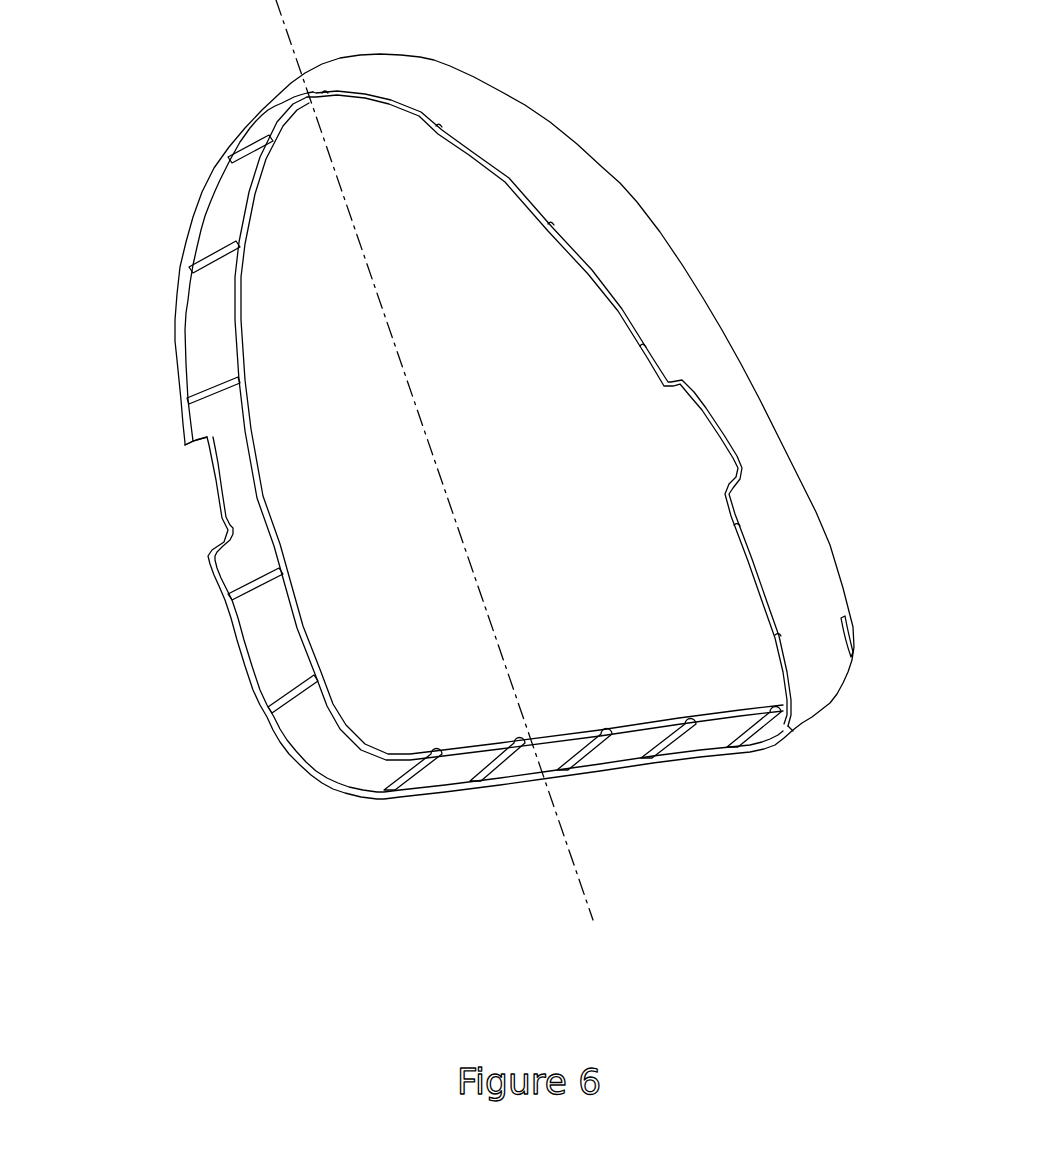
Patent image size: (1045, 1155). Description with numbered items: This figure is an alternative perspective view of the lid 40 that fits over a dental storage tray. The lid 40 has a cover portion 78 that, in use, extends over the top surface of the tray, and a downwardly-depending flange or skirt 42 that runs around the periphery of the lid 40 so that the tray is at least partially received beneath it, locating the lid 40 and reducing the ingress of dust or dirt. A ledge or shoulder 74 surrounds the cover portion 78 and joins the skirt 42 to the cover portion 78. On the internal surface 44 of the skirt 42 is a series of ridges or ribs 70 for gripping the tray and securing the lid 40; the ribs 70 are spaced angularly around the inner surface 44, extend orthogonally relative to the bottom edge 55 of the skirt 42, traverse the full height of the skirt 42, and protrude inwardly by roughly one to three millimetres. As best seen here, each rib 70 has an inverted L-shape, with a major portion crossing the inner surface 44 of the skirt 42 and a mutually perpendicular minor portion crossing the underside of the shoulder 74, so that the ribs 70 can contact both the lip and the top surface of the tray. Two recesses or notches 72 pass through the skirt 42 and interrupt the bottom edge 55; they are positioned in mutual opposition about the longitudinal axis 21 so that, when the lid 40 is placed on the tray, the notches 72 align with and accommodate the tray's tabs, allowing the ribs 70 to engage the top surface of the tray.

The lid 40 is at (680, 188).
The skirt 42 is at (540, 143).
The internal surface 44 is at (200, 427).
The notches 72 is at (715, 423).
The cover portion 78 is at (802, 500).
The ribs 70 is at (192, 413).
The shoulder 74 is at (450, 752).
The bottom edge 55 is at (793, 735).
The longitudinal axis 21 is at (580, 888).